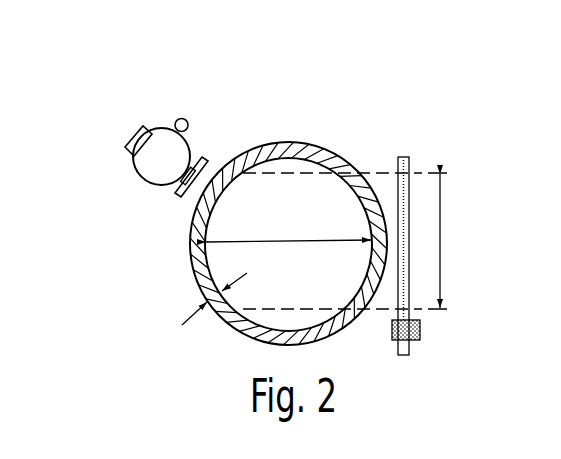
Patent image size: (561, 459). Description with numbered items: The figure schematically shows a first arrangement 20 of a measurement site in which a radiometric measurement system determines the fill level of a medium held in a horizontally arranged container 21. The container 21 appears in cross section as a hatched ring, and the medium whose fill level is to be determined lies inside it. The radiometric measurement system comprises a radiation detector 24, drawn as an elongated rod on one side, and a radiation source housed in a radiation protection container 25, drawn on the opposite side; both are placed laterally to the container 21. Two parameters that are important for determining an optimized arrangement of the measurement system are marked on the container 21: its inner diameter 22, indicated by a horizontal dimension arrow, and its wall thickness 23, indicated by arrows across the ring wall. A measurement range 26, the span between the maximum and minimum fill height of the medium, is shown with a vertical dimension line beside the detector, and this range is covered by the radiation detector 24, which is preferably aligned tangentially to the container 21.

The first arrangement 20 is at (297, 106).
The container 21 is at (242, 152).
The inner diameter 22 is at (270, 242).
The wall thickness 23 is at (183, 325).
The radiation detector 24 is at (420, 333).
The radiation protection container 25 is at (152, 178).
The measurement range 26 is at (441, 243).